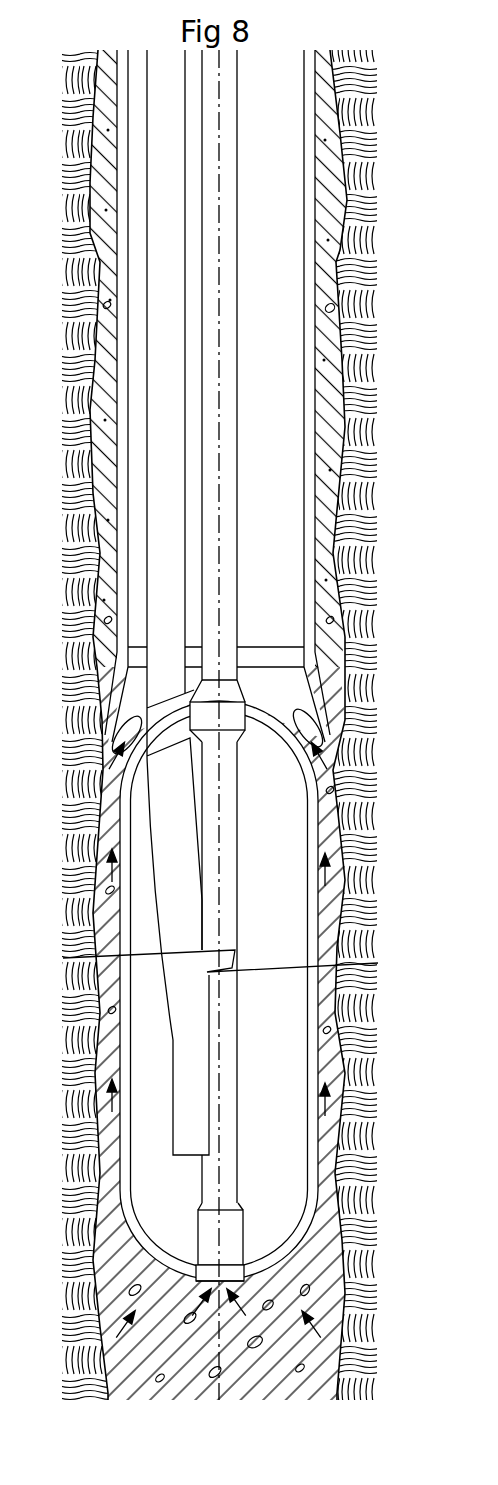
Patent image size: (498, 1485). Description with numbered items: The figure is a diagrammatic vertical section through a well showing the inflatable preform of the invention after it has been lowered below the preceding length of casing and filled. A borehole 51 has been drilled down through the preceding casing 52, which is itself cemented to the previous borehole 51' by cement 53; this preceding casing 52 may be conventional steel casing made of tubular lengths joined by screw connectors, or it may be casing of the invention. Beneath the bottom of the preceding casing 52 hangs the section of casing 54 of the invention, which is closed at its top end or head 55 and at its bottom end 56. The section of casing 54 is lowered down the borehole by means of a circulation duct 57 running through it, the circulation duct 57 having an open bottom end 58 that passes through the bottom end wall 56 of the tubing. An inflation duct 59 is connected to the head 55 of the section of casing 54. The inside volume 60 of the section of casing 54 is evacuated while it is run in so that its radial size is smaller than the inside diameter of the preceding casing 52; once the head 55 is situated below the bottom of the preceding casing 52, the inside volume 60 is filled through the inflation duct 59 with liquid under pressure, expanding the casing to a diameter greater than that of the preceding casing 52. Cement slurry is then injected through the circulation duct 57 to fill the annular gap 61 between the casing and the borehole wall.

The borehole 51 is at (244, 949).
The previous borehole 51' is at (245, 725).
The preceding casing 52 is at (310, 226).
The cement 53 is at (328, 332).
The section of casing 54 is at (337, 830).
The head 55 is at (290, 728).
The bottom end 56 is at (265, 1262).
The circulation duct 57 is at (237, 457).
The open bottom end 58 is at (232, 1283).
The inflation duct 59 is at (162, 573).
The inside volume 60 is at (285, 790).
The annular gap 61 is at (345, 1018).